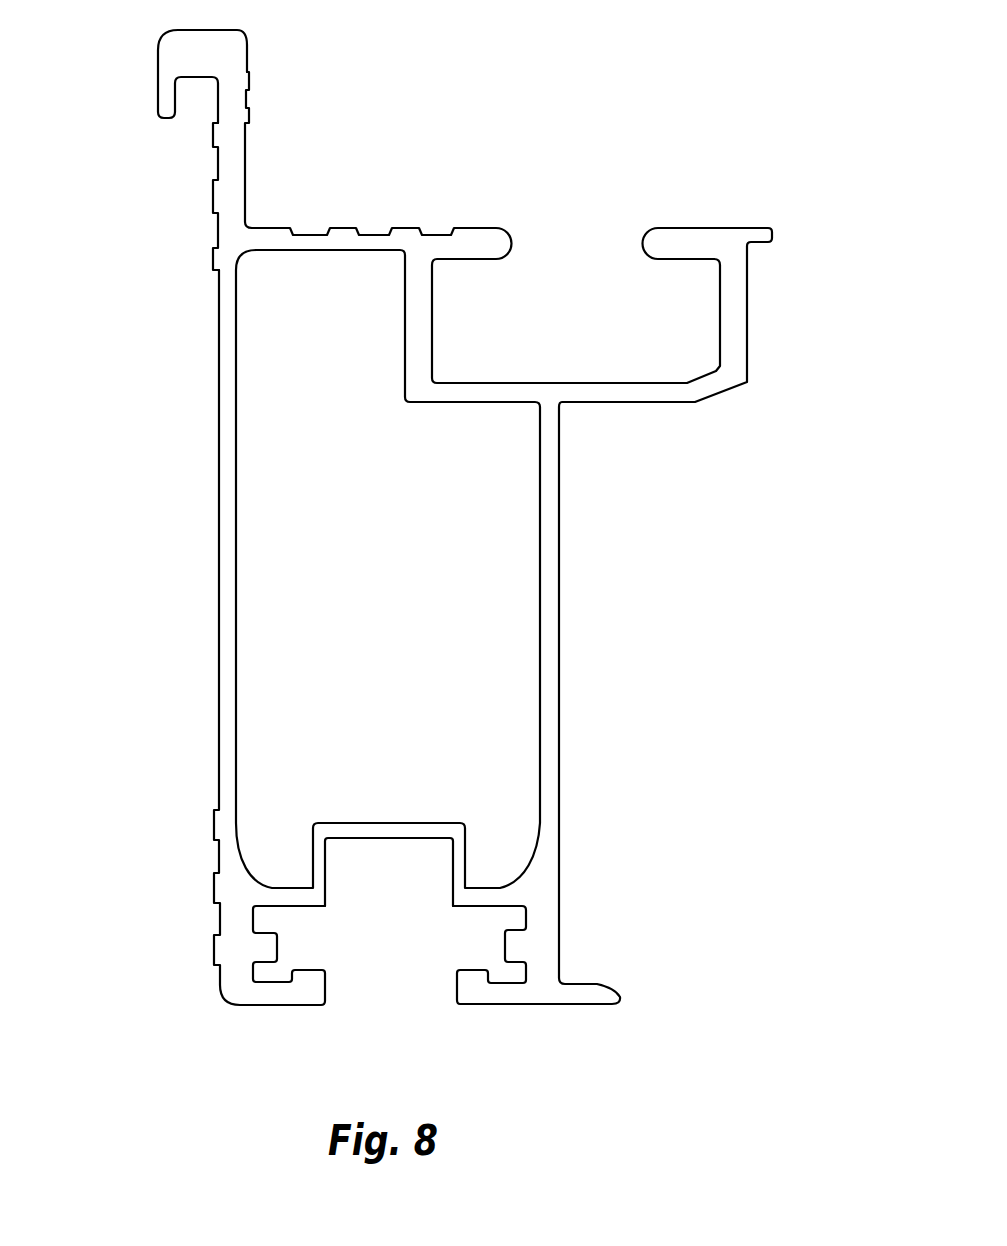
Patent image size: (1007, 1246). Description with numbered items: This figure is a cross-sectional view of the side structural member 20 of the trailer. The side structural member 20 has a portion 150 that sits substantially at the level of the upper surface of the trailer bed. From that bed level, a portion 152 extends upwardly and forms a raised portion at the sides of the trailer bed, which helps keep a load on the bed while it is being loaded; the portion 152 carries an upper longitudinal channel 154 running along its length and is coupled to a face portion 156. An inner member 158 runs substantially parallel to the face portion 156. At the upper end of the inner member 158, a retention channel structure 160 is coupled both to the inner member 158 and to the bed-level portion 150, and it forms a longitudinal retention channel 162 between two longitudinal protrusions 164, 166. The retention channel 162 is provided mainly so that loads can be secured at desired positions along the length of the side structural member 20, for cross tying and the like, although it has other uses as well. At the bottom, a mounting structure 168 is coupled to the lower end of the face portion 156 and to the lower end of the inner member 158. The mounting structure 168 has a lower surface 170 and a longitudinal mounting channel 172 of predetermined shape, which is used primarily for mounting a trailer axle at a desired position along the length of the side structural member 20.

The side structural member 20 is at (355, 115).
The portion 150 is at (341, 228).
The portion 152 is at (249, 108).
The upper longitudinal channel 154 is at (199, 78).
The face portion 156 is at (219, 543).
The inner member 158 is at (540, 510).
The retention channel structure 160 is at (747, 327).
The longitudinal retention channel 162 is at (577, 232).
The longitudinal protrusion 164 is at (460, 262).
The longitudinal protrusion 166 is at (675, 262).
The mounting structure 168 is at (383, 823).
The lower surface 170 is at (497, 1004).
The longitudinal mounting channel 172 is at (390, 979).